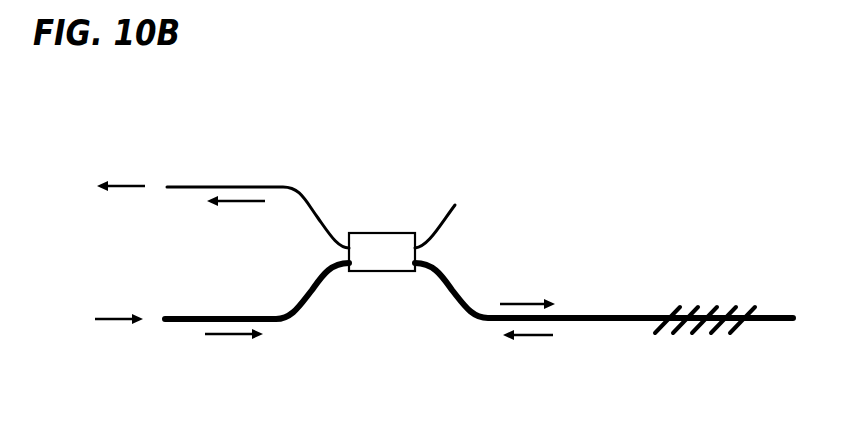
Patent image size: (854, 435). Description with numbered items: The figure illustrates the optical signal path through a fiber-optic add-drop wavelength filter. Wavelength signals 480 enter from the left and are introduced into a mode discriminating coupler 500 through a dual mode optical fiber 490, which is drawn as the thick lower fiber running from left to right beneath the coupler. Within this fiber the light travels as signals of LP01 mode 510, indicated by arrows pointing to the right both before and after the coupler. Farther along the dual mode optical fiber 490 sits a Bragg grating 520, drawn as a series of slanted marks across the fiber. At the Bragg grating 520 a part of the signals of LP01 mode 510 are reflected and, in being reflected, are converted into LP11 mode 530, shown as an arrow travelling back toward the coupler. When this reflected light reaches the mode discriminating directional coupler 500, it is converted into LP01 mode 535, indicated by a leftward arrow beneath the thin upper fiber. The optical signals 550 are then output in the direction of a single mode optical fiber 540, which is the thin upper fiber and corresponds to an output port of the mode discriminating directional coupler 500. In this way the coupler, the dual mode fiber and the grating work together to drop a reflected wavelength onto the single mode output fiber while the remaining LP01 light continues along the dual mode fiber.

The wavelength signals 480 is at (85, 322).
The dual mode optical fiber 490 is at (612, 325).
The mode discriminating coupler 500 is at (383, 234).
The LP01 mode signals 510 is at (380, 316).
The Bragg grating 520 is at (712, 306).
The LP11 mode signals 530 is at (529, 357).
The LP01 mode signals 535 is at (236, 218).
The single mode optical fiber 540 is at (229, 186).
The optical signals 550 is at (84, 182).